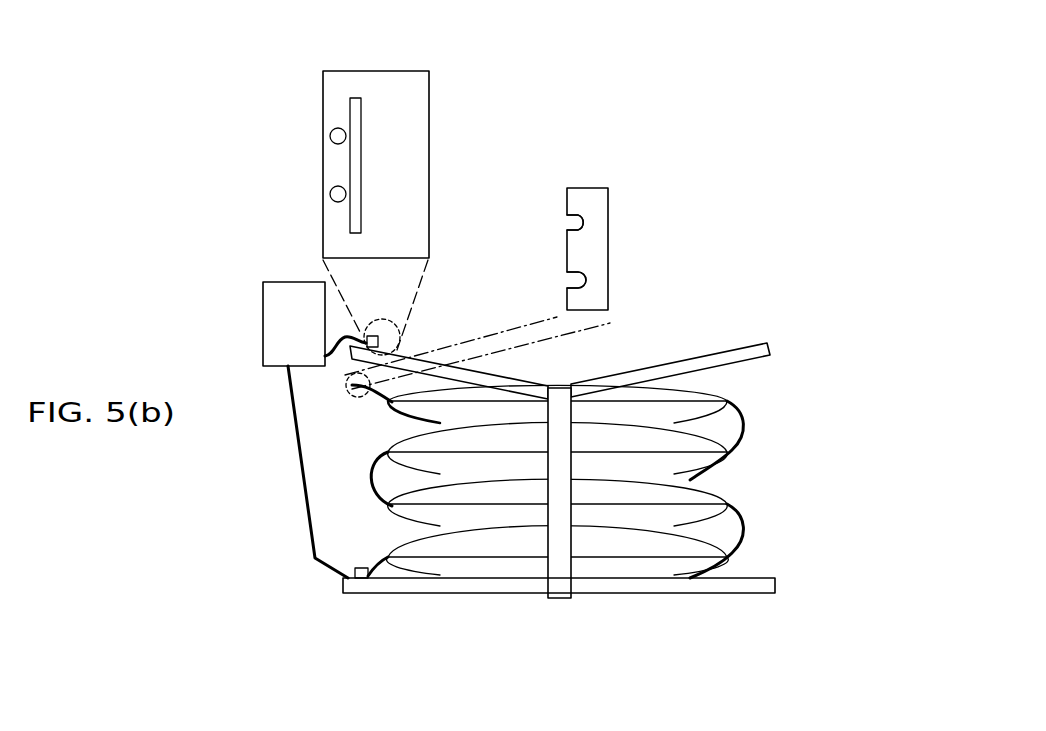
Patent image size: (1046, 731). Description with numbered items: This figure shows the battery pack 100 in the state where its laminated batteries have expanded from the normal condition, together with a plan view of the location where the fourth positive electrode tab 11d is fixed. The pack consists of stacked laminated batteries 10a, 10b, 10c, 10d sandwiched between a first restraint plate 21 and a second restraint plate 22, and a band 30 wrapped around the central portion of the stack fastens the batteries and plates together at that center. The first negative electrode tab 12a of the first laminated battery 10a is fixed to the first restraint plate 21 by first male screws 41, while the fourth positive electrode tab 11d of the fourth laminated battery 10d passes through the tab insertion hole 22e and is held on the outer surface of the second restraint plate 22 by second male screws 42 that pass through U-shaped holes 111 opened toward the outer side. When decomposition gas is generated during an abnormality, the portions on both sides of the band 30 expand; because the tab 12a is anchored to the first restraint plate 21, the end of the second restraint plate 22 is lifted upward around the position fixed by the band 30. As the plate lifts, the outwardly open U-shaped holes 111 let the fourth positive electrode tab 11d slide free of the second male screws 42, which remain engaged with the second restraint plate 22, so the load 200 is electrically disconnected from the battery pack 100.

The second restraint plate 22 is at (323, 88).
The tab insertion hole 22e is at (358, 103).
The second male screw 42 is at (330, 136).
The load 200 is at (263, 318).
The fourth positive electrode tab 11d is at (590, 188).
The U-shaped hole 111 is at (568, 222).
The battery pack 100 is at (748, 322).
The first laminated battery 10a is at (718, 540).
The second laminated battery 10b is at (705, 486).
The third laminated battery 10c is at (718, 430).
The fourth laminated battery 10d is at (700, 385).
The band 30 is at (560, 599).
The first restraint plate 21 is at (712, 594).
The first male screw 41 is at (360, 567).
The first negative electrode tab 12a is at (370, 572).